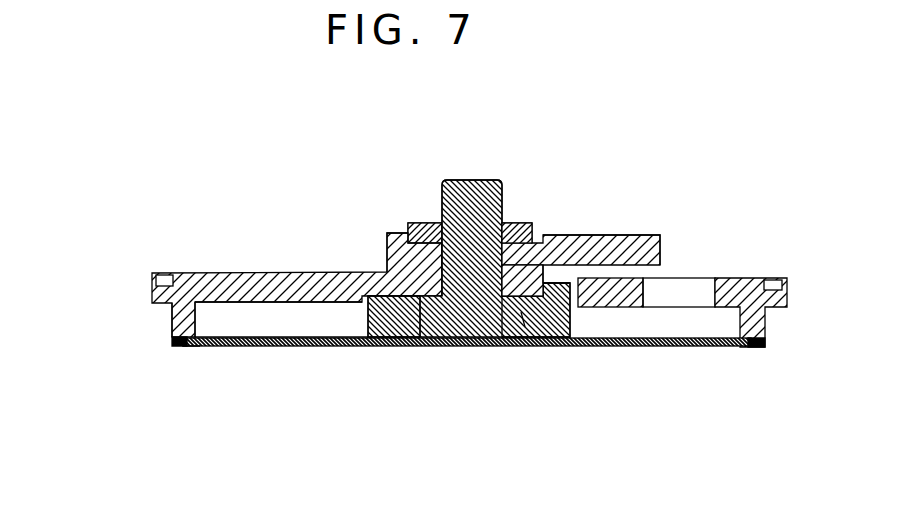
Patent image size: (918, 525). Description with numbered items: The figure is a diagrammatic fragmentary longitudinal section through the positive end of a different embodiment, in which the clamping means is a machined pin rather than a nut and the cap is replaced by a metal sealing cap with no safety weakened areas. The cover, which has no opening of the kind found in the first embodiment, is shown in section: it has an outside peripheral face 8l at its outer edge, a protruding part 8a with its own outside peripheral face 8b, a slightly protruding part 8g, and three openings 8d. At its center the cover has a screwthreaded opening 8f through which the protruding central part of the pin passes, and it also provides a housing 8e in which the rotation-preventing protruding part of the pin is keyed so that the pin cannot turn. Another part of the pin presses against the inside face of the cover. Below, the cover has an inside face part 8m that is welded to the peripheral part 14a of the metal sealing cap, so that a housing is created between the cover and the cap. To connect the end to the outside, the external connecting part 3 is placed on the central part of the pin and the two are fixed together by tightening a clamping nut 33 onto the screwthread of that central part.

The outside peripheral face 8l is at (152, 281).
The clamping nut 33 is at (427, 222).
The slightly protruding part 8g is at (384, 270).
The screwthreaded opening 8f is at (504, 275).
The housing 8e is at (560, 263).
The external connecting part 3 is at (652, 233).
The openings 8d is at (643, 288).
The peripheral part 14a is at (192, 347).
The inside face part 8m is at (172, 346).
The outside peripheral face 8b is at (170, 317).
The protruding part 8a is at (175, 328).